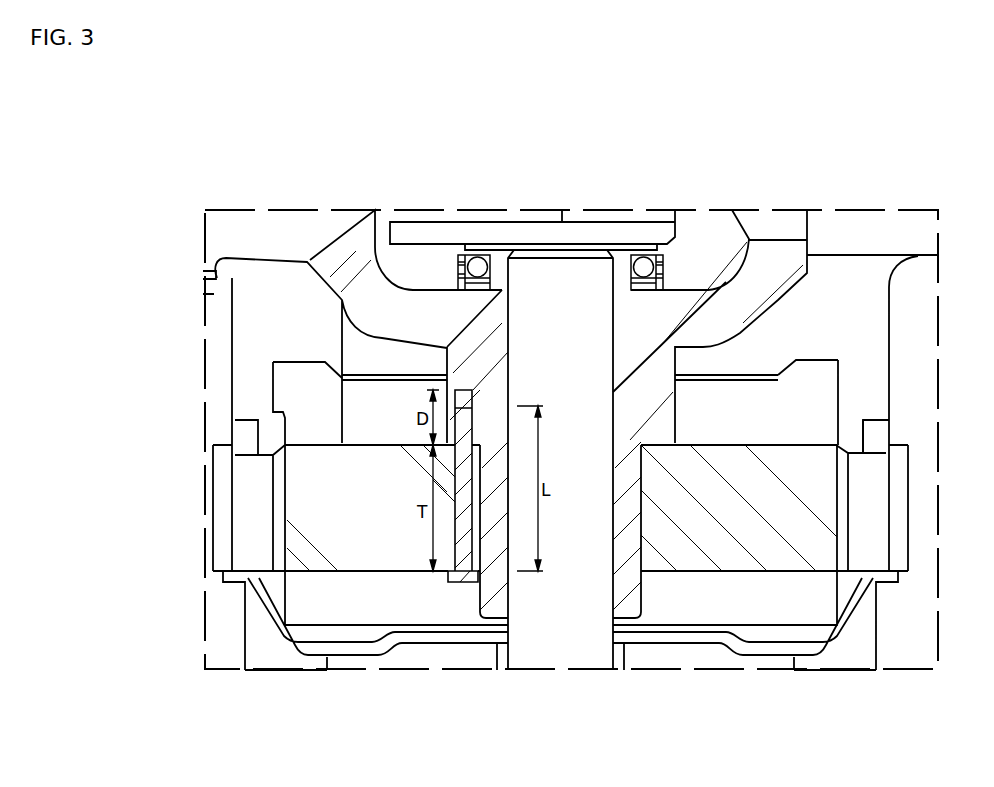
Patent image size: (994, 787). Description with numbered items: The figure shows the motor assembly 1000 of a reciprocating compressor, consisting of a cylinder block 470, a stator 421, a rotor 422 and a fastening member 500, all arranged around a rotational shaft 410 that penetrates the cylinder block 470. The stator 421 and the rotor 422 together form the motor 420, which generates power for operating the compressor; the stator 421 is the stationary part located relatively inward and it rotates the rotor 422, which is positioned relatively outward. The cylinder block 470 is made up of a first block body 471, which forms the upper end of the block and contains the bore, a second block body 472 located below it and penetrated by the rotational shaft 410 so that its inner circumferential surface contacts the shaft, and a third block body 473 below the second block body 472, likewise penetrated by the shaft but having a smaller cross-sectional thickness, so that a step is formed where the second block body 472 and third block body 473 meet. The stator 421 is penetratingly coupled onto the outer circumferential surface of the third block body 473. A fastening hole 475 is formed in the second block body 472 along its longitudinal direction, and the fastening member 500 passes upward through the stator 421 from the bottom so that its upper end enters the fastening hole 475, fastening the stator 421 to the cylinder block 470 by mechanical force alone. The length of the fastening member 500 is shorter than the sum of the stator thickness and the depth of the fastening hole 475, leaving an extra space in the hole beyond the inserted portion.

The motor assembly 1000 is at (846, 176).
The rotational shaft 410 is at (590, 290).
The fastening hole 475 is at (508, 372).
The cylinder block 470 is at (136, 222).
The first block body 471 is at (245, 210).
The second block body 472 is at (440, 372).
The third block body 473 is at (490, 500).
The fastening member 500 is at (462, 585).
The motor 420 is at (402, 718).
The stator 421 is at (390, 543).
The rotor 422 is at (258, 548).